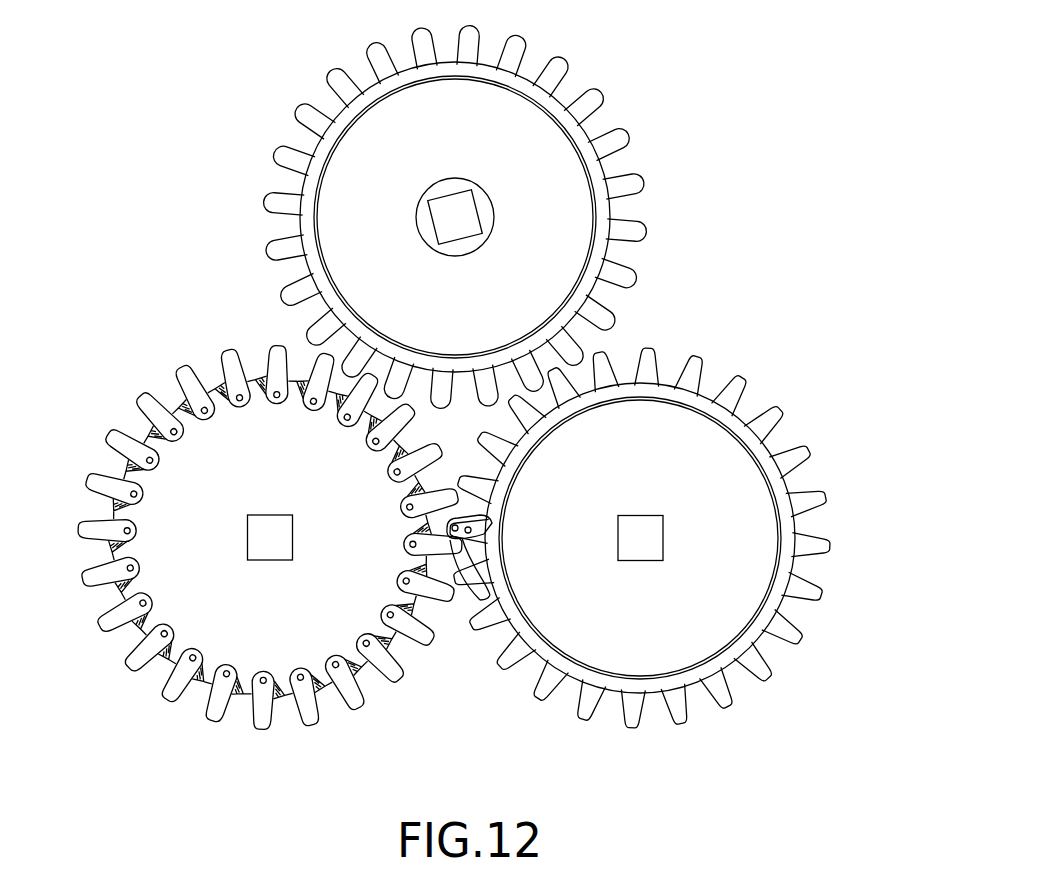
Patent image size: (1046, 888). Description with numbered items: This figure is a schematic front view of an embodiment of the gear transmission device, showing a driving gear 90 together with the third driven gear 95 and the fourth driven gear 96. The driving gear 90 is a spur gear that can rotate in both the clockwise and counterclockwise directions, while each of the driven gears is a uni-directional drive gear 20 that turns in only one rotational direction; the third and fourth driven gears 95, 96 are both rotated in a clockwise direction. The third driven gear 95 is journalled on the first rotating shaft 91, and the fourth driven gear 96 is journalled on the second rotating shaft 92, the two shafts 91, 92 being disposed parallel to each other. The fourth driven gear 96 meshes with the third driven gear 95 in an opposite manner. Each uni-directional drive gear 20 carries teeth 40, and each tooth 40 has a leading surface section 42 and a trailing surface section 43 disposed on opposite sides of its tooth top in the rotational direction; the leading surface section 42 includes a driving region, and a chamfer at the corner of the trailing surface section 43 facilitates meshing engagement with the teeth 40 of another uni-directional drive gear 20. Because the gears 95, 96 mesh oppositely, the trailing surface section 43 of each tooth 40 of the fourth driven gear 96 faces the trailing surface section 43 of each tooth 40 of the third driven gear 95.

The driving gear 90 is at (648, 182).
The first rotating shaft 91 is at (268, 552).
The second rotating shaft 92 is at (648, 543).
The third driven gear 95 is at (131, 667).
The fourth driven gear 96 is at (773, 677).
The uni-directional drive gear 20 is at (450, 558).
The tooth 40 is at (410, 547).
The leading surface section 42 is at (430, 530).
The trailing surface section 43 is at (468, 540).